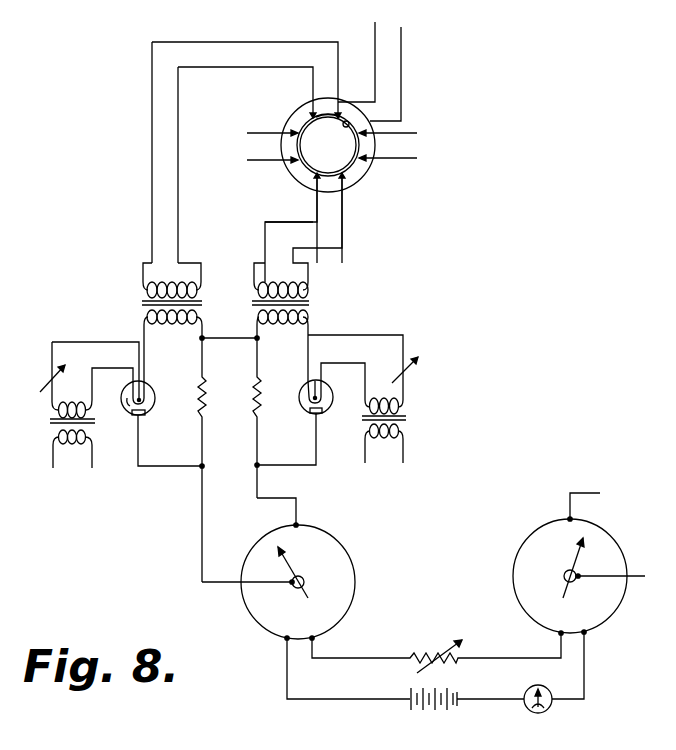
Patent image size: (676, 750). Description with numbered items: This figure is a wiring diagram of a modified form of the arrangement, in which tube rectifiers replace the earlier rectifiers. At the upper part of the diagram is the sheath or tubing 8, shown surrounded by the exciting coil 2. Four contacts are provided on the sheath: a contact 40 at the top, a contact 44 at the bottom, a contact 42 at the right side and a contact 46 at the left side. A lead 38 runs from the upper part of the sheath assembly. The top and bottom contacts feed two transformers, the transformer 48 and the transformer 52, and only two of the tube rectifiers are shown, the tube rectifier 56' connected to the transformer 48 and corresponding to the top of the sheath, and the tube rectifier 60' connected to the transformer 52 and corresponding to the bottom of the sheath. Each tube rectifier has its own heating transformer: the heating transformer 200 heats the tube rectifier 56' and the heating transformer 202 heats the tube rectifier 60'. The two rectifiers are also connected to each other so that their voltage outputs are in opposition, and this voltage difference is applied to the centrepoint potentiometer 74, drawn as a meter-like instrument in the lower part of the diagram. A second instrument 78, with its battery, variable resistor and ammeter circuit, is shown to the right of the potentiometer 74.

The exciting coil 2 is at (292, 113).
The sheath or tubing 8 is at (350, 123).
The lead 38 is at (387, 26).
The contact 40 is at (246, 152).
The contact 42 is at (363, 133).
The contact 44 is at (320, 180).
The contact 46 is at (297, 137).
The transformer 48 is at (212, 295).
The transformer 52 is at (309, 301).
The tube rectifier 56' is at (127, 404).
The tube rectifier 60' is at (330, 400).
The centrepoint potentiometer 74 is at (318, 530).
The meter 78 is at (522, 546).
The heating transformer 200 is at (55, 423).
The heating transformer 202 is at (362, 418).